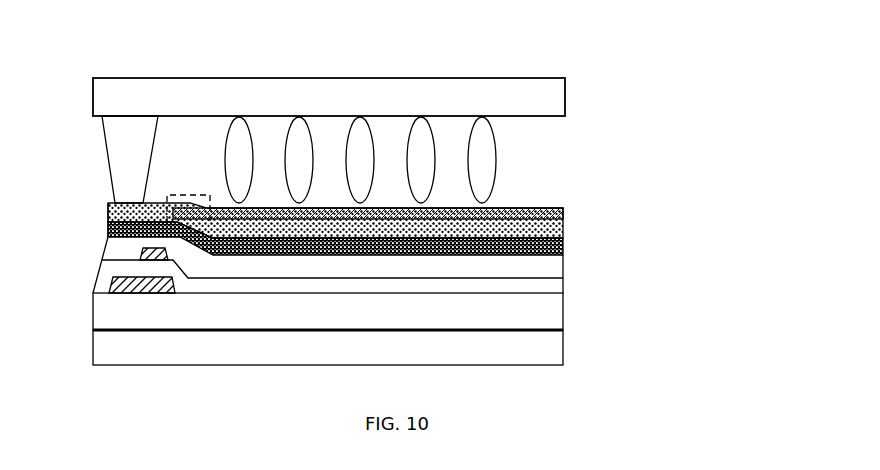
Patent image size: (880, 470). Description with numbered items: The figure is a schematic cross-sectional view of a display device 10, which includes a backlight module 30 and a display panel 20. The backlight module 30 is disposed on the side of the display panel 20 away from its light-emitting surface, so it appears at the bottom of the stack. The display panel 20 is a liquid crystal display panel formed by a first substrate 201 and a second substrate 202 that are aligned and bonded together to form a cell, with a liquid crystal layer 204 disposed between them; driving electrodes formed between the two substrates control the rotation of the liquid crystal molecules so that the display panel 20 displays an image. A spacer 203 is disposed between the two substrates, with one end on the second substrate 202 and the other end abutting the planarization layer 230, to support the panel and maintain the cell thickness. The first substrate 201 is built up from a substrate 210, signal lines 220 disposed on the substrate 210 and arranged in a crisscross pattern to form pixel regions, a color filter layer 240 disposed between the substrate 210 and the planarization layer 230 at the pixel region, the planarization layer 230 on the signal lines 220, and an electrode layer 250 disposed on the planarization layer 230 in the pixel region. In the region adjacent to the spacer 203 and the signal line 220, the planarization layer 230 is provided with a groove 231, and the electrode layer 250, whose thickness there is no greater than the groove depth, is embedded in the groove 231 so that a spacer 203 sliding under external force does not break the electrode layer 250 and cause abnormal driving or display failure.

The display device 10 is at (105, 47).
The display panel 20 is at (718, 94).
The backlight module 30 is at (547, 350).
The first substrate 201 is at (653, 203).
The second substrate 202 is at (530, 97).
The spacer 203 is at (130, 155).
The liquid crystal layer 204 is at (487, 163).
The substrate 210 is at (538, 316).
The signal lines 220 is at (565, 257).
The planarization layer 230 is at (545, 228).
The groove 231 is at (168, 220).
The color filter layer 240 is at (545, 250).
The electrode layer 250 is at (557, 207).